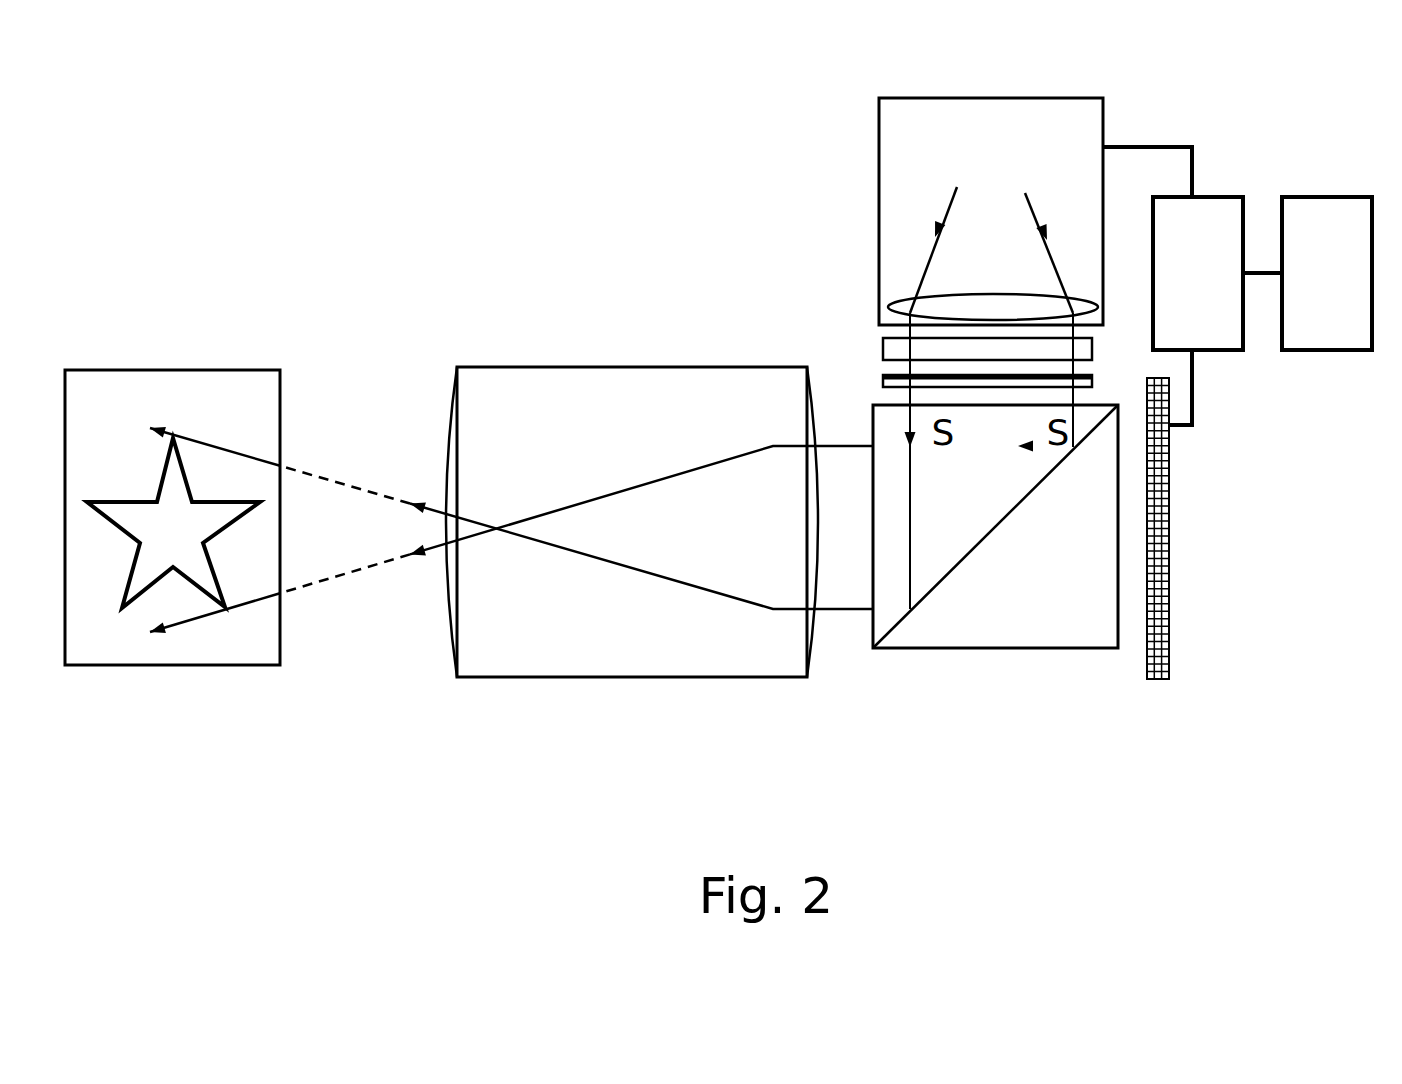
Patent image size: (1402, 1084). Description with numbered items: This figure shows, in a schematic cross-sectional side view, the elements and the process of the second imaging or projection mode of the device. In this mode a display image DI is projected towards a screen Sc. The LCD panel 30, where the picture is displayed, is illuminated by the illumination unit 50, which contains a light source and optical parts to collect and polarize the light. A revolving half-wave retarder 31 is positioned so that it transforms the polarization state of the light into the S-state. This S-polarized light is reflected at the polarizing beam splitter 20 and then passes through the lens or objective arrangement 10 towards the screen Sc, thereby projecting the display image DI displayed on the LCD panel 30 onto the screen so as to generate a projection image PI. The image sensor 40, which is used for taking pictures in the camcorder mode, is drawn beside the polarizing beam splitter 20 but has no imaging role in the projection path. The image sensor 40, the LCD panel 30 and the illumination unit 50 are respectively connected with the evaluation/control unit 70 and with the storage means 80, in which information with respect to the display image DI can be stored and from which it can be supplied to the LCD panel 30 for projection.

The lens or objective arrangement 10 is at (603, 447).
The polarizing beam splitter 20 is at (975, 620).
The LCD panel 30 is at (1092, 346).
The revolving half-wave retarder 31 is at (1092, 380).
The image sensor 40 is at (1169, 669).
The illumination unit 50 is at (1010, 161).
The evaluation/control unit 70 is at (1224, 290).
The storage means 80 is at (1354, 290).
The screen Sc is at (252, 418).
The projection image PI is at (152, 548).
The display image DI is at (872, 358).